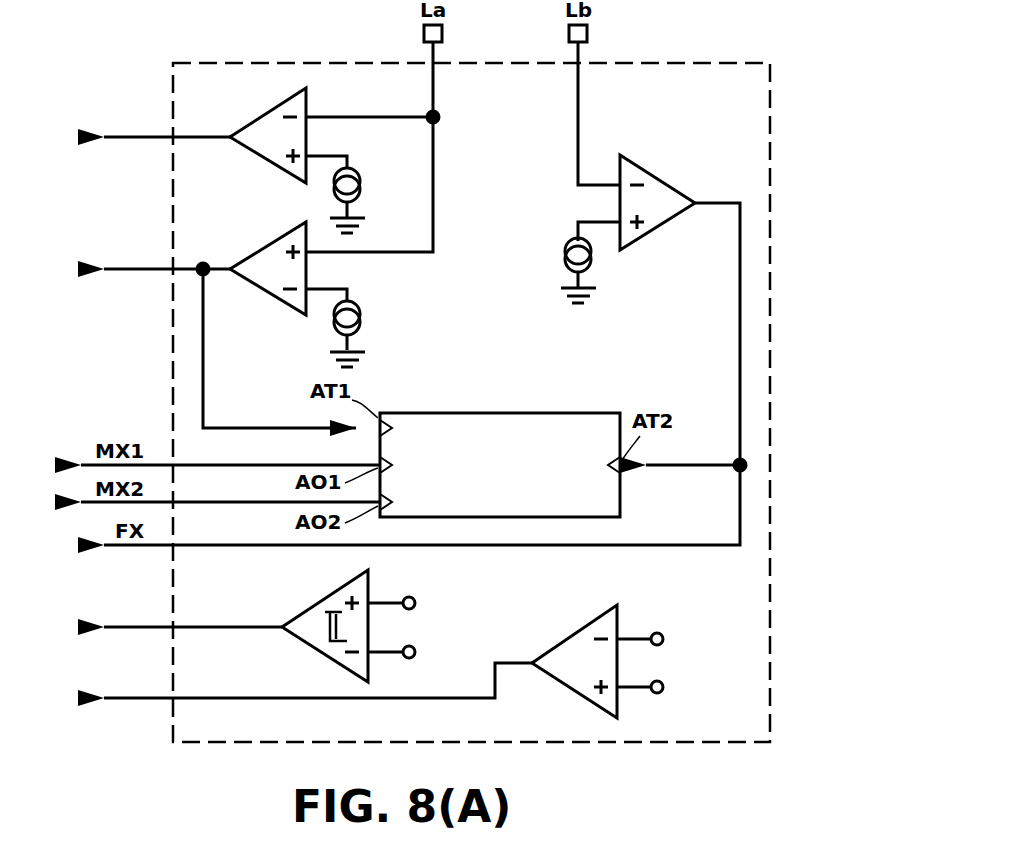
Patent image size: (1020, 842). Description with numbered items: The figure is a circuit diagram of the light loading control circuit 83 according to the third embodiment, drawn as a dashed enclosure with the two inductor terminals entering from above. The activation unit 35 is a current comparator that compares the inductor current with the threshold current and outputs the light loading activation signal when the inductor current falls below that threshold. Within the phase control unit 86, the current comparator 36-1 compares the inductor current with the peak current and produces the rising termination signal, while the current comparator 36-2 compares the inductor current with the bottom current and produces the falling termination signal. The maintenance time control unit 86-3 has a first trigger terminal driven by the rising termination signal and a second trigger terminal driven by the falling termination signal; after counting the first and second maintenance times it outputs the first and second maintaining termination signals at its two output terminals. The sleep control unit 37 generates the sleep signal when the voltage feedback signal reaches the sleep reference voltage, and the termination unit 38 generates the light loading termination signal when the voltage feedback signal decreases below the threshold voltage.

The light loading control circuit 83 is at (772, 90).
The activation unit 35 is at (458, 118).
The current comparator 36-1 is at (264, 244).
The current comparator 36-2 is at (660, 178).
The phase control unit 86 is at (497, 352).
The maintenance time control unit 86-3 is at (548, 412).
The sleep control unit 37 is at (308, 592).
The termination unit 38 is at (640, 593).